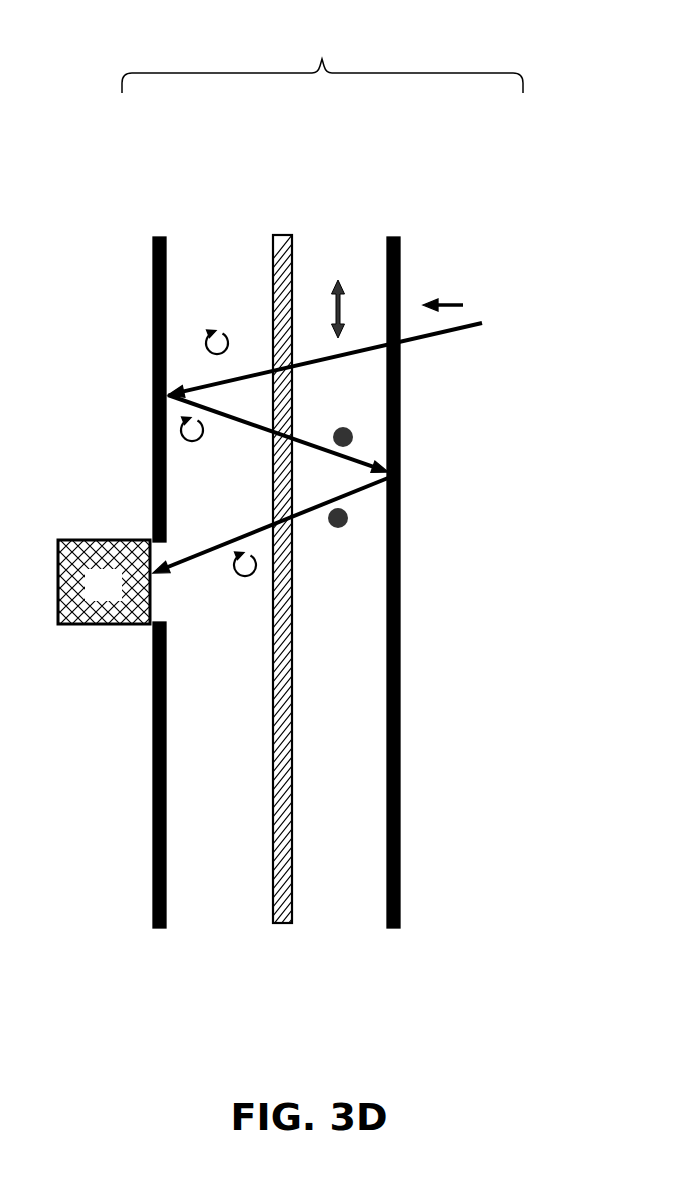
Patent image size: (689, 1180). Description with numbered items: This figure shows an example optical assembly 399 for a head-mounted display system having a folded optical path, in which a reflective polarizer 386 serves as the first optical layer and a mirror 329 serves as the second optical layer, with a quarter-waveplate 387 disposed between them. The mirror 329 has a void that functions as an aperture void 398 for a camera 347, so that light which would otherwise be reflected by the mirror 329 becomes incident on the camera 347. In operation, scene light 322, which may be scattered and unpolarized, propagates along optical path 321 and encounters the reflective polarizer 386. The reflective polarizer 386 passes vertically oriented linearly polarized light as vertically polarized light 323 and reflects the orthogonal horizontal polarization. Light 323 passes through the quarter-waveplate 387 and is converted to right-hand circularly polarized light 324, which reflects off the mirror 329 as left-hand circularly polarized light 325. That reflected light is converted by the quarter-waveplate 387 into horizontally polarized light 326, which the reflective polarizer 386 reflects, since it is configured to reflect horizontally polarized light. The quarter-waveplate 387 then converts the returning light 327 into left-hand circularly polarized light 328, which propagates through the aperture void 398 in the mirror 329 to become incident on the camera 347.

The optical assembly 399 is at (322, 58).
The mirror 329 is at (158, 236).
The quarter-waveplate 387 is at (281, 234).
The reflective polarizer 386 is at (393, 236).
The optical path 321 is at (473, 321).
The scene light 322 is at (443, 291).
The vertically polarized light 323 is at (337, 297).
The right-hand circularly polarized light 324 is at (217, 326).
The left-hand circularly polarized light 325 is at (193, 442).
The horizontally polarized light 326 is at (345, 425).
The light 327 is at (337, 532).
The left-hand circularly polarized light 328 is at (247, 576).
The camera 347 is at (104, 582).
The aperture void 398 is at (175, 603).